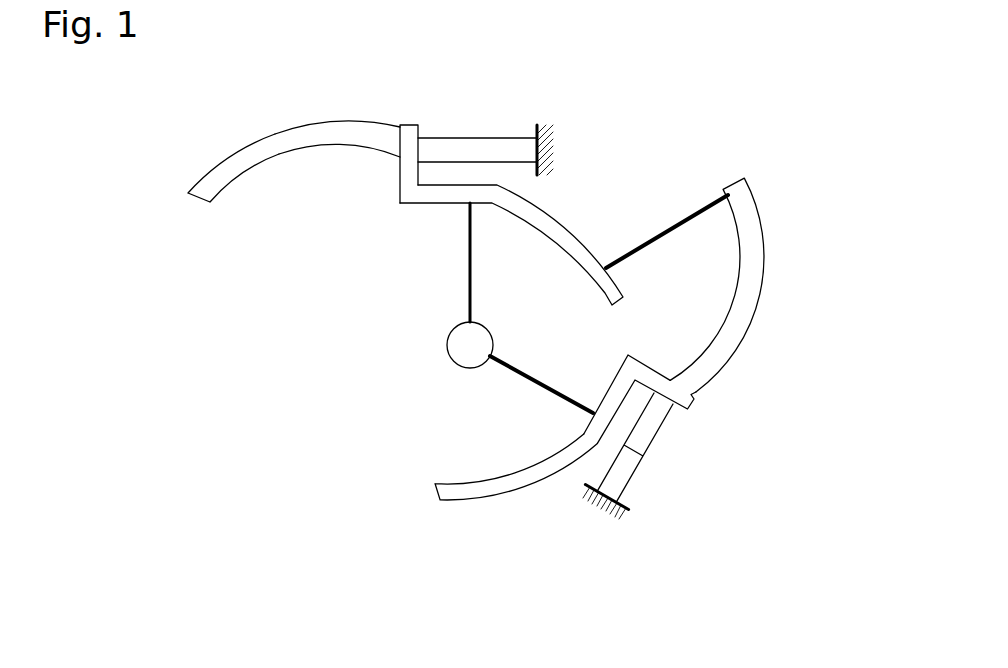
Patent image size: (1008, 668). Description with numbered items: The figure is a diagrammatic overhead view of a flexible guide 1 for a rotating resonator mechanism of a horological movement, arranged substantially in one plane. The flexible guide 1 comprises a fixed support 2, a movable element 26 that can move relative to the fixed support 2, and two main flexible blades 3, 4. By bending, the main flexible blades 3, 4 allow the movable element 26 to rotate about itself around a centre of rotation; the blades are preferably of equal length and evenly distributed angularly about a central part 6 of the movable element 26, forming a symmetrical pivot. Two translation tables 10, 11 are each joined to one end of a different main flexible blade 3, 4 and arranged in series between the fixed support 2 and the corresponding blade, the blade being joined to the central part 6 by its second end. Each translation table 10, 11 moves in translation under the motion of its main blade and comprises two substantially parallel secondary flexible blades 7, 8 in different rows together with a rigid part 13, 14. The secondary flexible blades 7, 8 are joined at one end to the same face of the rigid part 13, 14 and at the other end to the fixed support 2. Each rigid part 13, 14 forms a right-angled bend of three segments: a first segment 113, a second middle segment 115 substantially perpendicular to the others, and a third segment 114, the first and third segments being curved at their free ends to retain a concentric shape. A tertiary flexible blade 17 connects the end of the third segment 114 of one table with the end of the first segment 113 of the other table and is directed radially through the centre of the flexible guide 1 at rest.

The flexible guide 1 is at (823, 124).
The fixed support 2 is at (547, 138).
The main flexible blade 3 is at (473, 257).
The main flexible blade 4 is at (545, 378).
The central part 6 is at (488, 362).
The secondary flexible blade 7 is at (520, 162).
The secondary flexible blade 8 is at (625, 493).
The translation table 10 is at (370, 167).
The translation table 11 is at (700, 406).
The rigid part 13 is at (365, 132).
The rigid part 14 is at (692, 380).
The tertiary flexible blade 17 is at (698, 210).
The movable element 26 is at (422, 323).
The first segment 113 is at (563, 238).
The third segment 114 is at (268, 140).
The second middle segment 115 is at (408, 172).